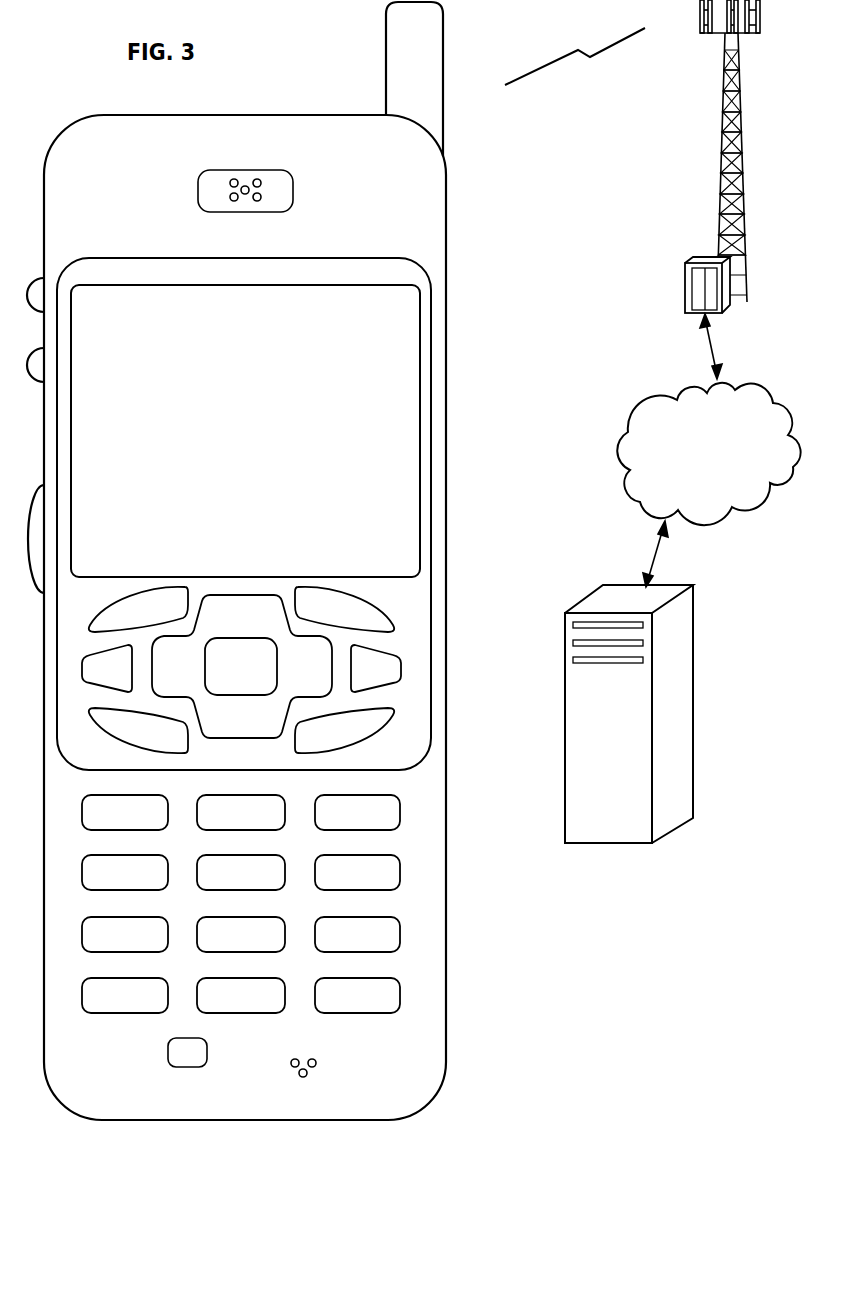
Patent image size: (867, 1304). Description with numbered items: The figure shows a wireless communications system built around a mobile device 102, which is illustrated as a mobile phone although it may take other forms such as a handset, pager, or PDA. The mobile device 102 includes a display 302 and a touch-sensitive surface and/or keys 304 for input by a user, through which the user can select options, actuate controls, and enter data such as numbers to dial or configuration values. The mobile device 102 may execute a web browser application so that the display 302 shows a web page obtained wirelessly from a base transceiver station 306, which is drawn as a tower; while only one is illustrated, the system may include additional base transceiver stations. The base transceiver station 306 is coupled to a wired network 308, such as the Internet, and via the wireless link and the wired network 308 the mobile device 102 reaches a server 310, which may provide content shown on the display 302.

The mobile device 102 is at (88, 1118).
The display 302 is at (420, 298).
The keys 304 is at (457, 1025).
The base transceiver station 306 is at (717, 167).
The wired network 308 is at (620, 500).
The server 310 is at (605, 844).